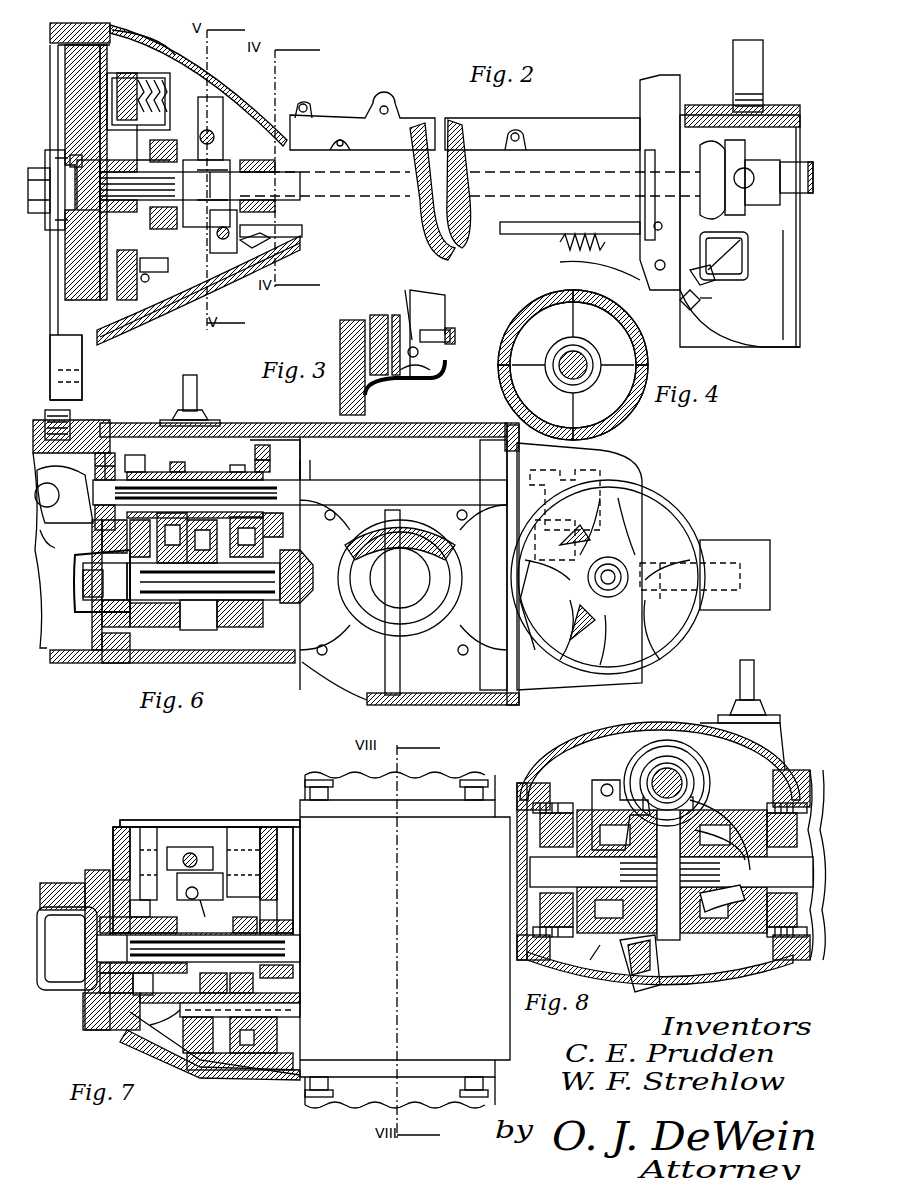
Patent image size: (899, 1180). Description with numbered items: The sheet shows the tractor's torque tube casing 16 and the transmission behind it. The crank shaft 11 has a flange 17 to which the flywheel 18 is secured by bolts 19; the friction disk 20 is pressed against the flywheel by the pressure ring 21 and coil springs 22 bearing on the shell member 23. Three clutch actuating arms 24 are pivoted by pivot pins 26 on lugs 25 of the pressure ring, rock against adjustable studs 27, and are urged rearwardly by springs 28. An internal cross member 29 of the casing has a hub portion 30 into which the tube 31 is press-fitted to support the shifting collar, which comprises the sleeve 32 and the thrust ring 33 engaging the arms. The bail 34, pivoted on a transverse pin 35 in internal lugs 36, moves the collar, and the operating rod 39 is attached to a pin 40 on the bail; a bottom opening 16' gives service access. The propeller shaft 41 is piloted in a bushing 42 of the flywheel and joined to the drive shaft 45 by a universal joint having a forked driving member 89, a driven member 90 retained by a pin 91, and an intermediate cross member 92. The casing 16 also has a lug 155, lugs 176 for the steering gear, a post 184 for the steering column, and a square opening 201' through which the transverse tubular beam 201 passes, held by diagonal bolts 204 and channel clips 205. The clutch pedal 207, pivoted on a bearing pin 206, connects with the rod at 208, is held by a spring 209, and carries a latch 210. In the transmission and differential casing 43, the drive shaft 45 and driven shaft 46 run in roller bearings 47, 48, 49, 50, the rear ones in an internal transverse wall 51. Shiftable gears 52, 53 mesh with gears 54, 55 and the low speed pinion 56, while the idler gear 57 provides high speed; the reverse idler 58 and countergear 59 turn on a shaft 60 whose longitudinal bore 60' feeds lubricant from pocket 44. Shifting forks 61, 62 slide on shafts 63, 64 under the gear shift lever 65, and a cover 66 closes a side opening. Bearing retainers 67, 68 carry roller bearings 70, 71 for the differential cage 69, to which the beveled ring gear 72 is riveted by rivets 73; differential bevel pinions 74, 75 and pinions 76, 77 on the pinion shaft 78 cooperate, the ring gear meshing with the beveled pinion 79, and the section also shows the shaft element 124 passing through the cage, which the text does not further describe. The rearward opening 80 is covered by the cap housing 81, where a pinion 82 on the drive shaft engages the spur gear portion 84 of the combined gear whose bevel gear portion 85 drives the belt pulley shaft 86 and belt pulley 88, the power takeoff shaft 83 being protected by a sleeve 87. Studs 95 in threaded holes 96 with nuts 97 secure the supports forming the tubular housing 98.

In FIG. 2, the crank shaft 11 is at (42, 206).
In FIG. 2, the torque tube casing 16 is at (542, 122).
In FIG. 4, the torque tube casing 16 is at (573, 360).
In FIG. 2, the bottom opening 16' is at (200, 290).
In FIG. 2, the flange 17 is at (50, 152).
In FIG. 2, the flywheel 18 is at (85, 305).
In FIG. 3, the flywheel 18 is at (340, 405).
In FIG. 2, the bolts 19 is at (85, 155).
In FIG. 2, the friction disk 20 is at (135, 125).
In FIG. 3, the friction disk 20 is at (408, 290).
In FIG. 2, the pressure ring 21 is at (122, 72).
In FIG. 3, the pressure ring 21 is at (380, 315).
In FIG. 2, the coil springs 22 is at (152, 105).
In FIG. 2, the shell member 23 is at (172, 55).
In FIG. 3, the shell member 23 is at (405, 384).
In FIG. 2, the clutch actuating arms 24 is at (434, 192).
In FIG. 3, the lugs 25 is at (412, 375).
In FIG. 3, the pivot pins 26 is at (420, 355).
In FIG. 2, the adjustable studs 27 is at (168, 264).
In FIG. 3, the adjustable studs 27 is at (456, 334).
In FIG. 3, the springs 28 is at (400, 308).
In FIG. 4, the internal cross member 29 is at (535, 358).
In FIG. 2, the central hub portion 30 is at (270, 213).
In FIG. 4, the central hub portion 30 is at (590, 378).
In FIG. 2, the tube 31 is at (140, 202).
In FIG. 4, the tube 31 is at (588, 352).
In FIG. 2, the sleeve 32 is at (200, 228).
In FIG. 2, the thrust ring 33 is at (150, 150).
In FIG. 2, the bail 34 is at (220, 253).
In FIG. 2, the transverse pin 35 is at (210, 127).
In FIG. 2, the internal lugs 36 is at (330, 143).
In FIG. 2, the operating rod 39 is at (365, 225).
In FIG. 2, the pin 40 is at (255, 244).
In FIG. 2, the propeller shaft 41 is at (370, 172).
In FIG. 2, the bushing 42 is at (88, 212).
In FIG. 6, the transmission and differential casing 43 is at (300, 425).
In FIG. 8, the transmission and differential casing 43 is at (600, 745).
In FIG. 7, the pocket 44 is at (160, 1035).
In FIG. 2, the drive shaft 45 is at (788, 162).
In FIG. 6, the drive shaft 45 is at (370, 480).
In FIG. 7, the drive shaft 45 is at (300, 948).
In FIG. 8, the drive shaft 45 is at (695, 778).
In FIG. 6, the driven shaft 46 is at (190, 600).
In FIG. 6, the roller bearing 47 is at (95, 530).
In FIG. 6, the roller bearing 48 is at (83, 612).
In FIG. 6, the roller bearing 49 is at (284, 469).
In FIG. 7, the roller bearing 49 is at (293, 927).
In FIG. 6, the roller bearing 50 is at (295, 603).
In FIG. 6, the internal transverse wall 51 is at (255, 450).
In FIG. 6, the shiftable gear 52 is at (168, 627).
In FIG. 6, the shiftable gear 53 is at (215, 630).
In FIG. 6, the gear 54 is at (135, 453).
In FIG. 7, the gear 54 is at (148, 978).
In FIG. 6, the second speed gear 55 is at (175, 462).
In FIG. 7, the second speed gear 55 is at (165, 925).
In FIG. 6, the low speed pinion 56 is at (230, 468).
In FIG. 6, the idler gear 57 is at (126, 620).
In FIG. 7, the reverse idler 58 is at (245, 1070).
In FIG. 7, the countergear 59 is at (208, 1070).
In FIG. 7, the shaft 60 is at (251, 1010).
In FIG. 7, the longitudinal bore 60' is at (165, 1013).
In FIG. 7, the shifting fork 61 is at (210, 917).
In FIG. 7, the shifting fork 62 is at (200, 847).
In FIG. 7, the shaft 63 is at (293, 880).
In FIG. 7, the shaft 64 is at (114, 860).
In FIG. 6, the gear shift lever 65 is at (198, 392).
In FIG. 8, the gear shift lever 65 is at (740, 682).
In FIG. 7, the cover 66 is at (160, 822).
In FIG. 8, the bearing retainer 67 is at (545, 871).
In FIG. 8, the bearing retainer 68 is at (798, 865).
In FIG. 8, the differential cage 69 is at (722, 825).
In FIG. 8, the roller bearing 70 is at (585, 915).
In FIG. 8, the roller bearing 71 is at (767, 912).
In FIG. 8, the beveled ring gear 72 is at (635, 780).
In FIG. 8, the rivets 73 is at (640, 938).
In FIG. 8, the differential bevel pinion 74 is at (608, 920).
In FIG. 8, the differential bevel pinion 75 is at (735, 912).
In FIG. 8, the differential bevel pinion 76 is at (705, 808).
In FIG. 8, the differential bevel pinion 77 is at (695, 925).
In FIG. 8, the pinion shaft 78 is at (660, 955).
In FIG. 6, the beveled pinion 79 is at (345, 560).
In FIG. 6, the rearward opening 80 is at (505, 680).
In FIG. 6, the cap housing 81 is at (635, 462).
In FIG. 6, the pinion 82 is at (548, 465).
In FIG. 6, the power takeoff shaft 83 is at (722, 590).
In FIG. 6, the spur gear portion 84 is at (545, 645).
In FIG. 6, the bevel gear portion 85 is at (585, 620).
In FIG. 6, the belt pulley shaft 86 is at (615, 565).
In FIG. 6, the protecting sleeve 87 is at (735, 545).
In FIG. 6, the belt pulley 88 is at (680, 505).
In FIG. 2, the forked driving member 89 is at (707, 176).
In FIG. 2, the driven member 90 is at (760, 202).
In FIG. 6, the driven member 90 is at (62, 470).
In FIG. 7, the driven member 90 is at (60, 990).
In FIG. 2, the pin 91 is at (768, 182).
In FIG. 6, the pin 91 is at (82, 500).
In FIG. 2, the intermediate cross member 92 is at (745, 150).
In FIG. 6, the intermediate cross member 92 is at (53, 544).
In FIG. 7, the studs 95 is at (320, 780).
In FIG. 6, the threaded holes 96 is at (336, 515).
In FIG. 7, the nuts 97 is at (330, 795).
In FIG. 7, the tubular housing 98 is at (425, 775).
In FIG. 8, the axle shaft 124 is at (671, 872).
In FIG. 2, the lug 155 is at (83, 388).
In FIG. 2, the lugs 176 is at (303, 104).
In FIG. 2, the post 184 is at (733, 57).
In FIG. 2, the transverse tubular beam 201 is at (741, 256).
In FIG. 2, the transverse opening 201' is at (728, 254).
In FIG. 2, the diagonal bolts 204 is at (684, 303).
In FIG. 2, the channel clips 205 is at (725, 292).
In FIG. 2, the bearing pin 206 is at (600, 270).
In FIG. 2, the clutch pedal 207 is at (652, 80).
In FIG. 2, the pivot connection 208 is at (654, 224).
In FIG. 2, the spring 209 is at (580, 250).
In FIG. 2, the latch 210 is at (645, 158).